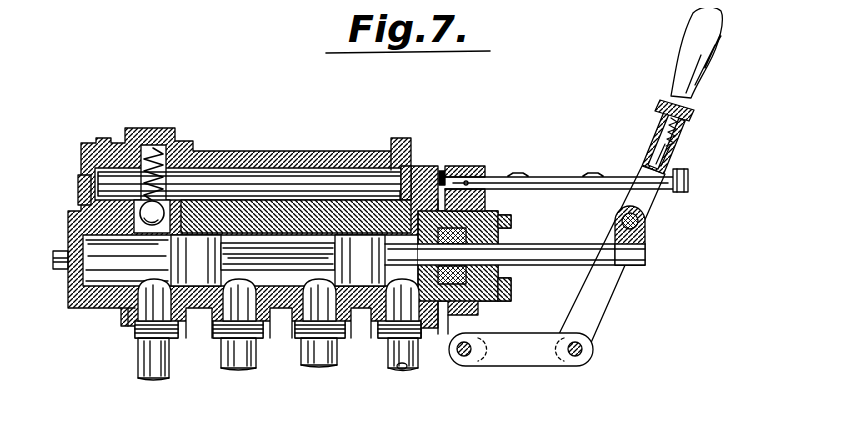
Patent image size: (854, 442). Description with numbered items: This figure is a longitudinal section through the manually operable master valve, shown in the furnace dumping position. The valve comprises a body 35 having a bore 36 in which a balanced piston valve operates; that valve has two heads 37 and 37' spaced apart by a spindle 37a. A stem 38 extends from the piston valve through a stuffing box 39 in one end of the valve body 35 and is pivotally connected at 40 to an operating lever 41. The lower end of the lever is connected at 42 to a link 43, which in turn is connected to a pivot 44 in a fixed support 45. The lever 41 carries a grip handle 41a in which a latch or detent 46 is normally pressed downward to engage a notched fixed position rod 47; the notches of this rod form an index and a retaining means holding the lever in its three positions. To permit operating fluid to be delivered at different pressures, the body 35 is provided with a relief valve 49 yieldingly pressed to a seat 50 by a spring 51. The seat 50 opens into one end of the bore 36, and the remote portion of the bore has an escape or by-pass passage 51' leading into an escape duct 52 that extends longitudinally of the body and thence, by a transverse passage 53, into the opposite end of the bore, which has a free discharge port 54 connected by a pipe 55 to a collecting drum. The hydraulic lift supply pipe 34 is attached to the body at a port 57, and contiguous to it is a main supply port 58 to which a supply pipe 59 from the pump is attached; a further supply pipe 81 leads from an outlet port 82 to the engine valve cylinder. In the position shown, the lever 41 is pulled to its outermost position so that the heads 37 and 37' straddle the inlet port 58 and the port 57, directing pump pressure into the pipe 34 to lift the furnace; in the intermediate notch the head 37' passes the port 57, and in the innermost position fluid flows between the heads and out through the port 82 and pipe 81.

The supply pipe 34 is at (311, 354).
The valve body 35 is at (290, 195).
The bore 36 is at (242, 214).
The valve head 37 is at (170, 260).
The spindle 37a is at (292, 214).
The valve head 37' is at (367, 226).
The stem 38 is at (594, 240).
The stuffing box 39 is at (503, 221).
The pivotal connection 40 is at (638, 220).
The operating lever 41 is at (598, 296).
The grip handle 41a is at (708, 50).
The connection 42 is at (576, 343).
The link 43 is at (538, 334).
The pivot 44 is at (464, 350).
The fixed support 45 is at (458, 322).
The detent 46 is at (681, 140).
The notched fixed position rod 47 is at (538, 170).
The relief valve 49 is at (153, 200).
The seat 50 is at (203, 186).
The spring 51 is at (168, 144).
The by-pass passage 51' is at (66, 182).
The escape duct 52 is at (238, 206).
The transverse passage 53 is at (415, 152).
The free discharge port 54 is at (413, 330).
The pipe 55 is at (397, 362).
The port 57 is at (312, 313).
The main supply port 58 is at (232, 308).
The supply pipe 59 is at (230, 363).
The supply pipe 81 is at (147, 356).
The outlet port 82 is at (114, 314).